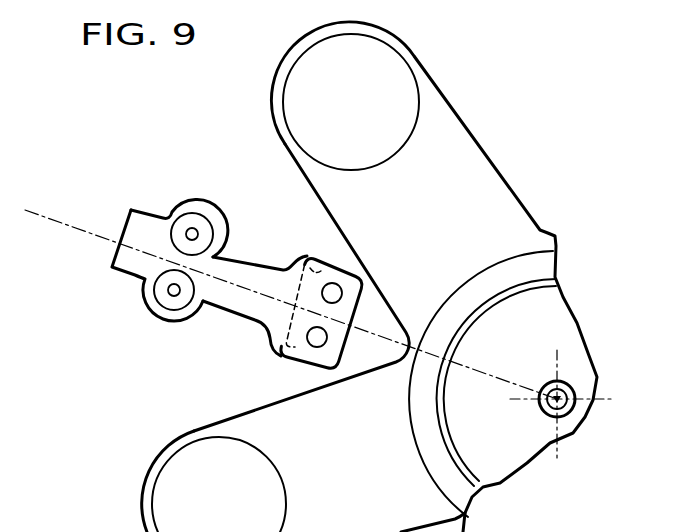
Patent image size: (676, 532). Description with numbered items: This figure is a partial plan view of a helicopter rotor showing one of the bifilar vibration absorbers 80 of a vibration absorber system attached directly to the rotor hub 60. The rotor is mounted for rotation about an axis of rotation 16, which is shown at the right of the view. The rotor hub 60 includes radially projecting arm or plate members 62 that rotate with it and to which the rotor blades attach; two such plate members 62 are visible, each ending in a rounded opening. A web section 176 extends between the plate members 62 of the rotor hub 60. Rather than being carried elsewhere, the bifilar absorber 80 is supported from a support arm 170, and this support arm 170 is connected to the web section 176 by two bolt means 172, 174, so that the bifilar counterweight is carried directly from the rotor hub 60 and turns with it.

The axis of rotation 16 is at (571, 386).
The rotor hub 60 is at (397, 36).
The plate members 62 is at (484, 157).
The bifilar absorber 80 is at (165, 198).
The support arm 170 is at (252, 270).
The bolt means 172 is at (336, 290).
The bolt means 174 is at (317, 342).
The web section 176 is at (383, 320).